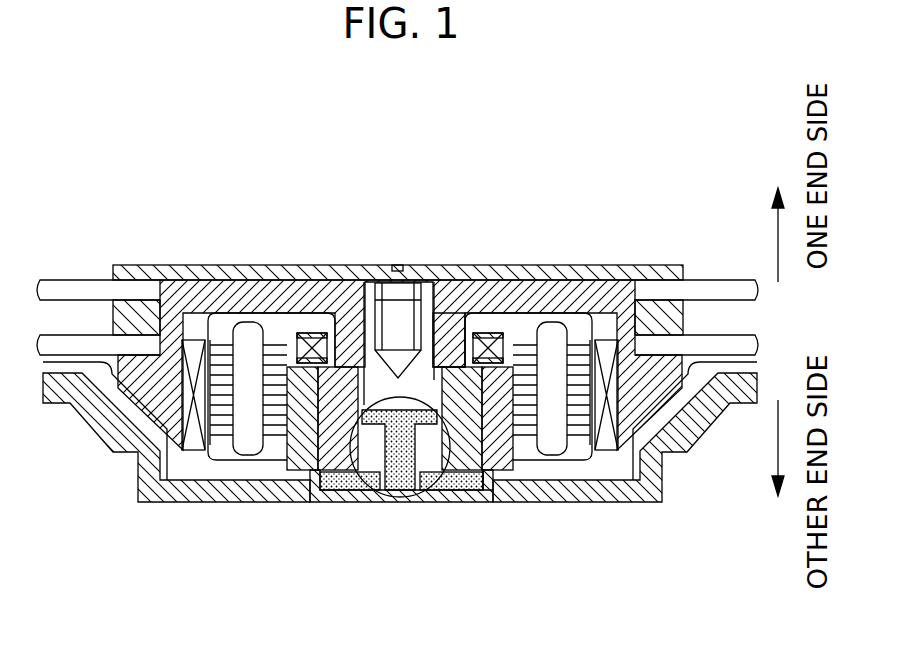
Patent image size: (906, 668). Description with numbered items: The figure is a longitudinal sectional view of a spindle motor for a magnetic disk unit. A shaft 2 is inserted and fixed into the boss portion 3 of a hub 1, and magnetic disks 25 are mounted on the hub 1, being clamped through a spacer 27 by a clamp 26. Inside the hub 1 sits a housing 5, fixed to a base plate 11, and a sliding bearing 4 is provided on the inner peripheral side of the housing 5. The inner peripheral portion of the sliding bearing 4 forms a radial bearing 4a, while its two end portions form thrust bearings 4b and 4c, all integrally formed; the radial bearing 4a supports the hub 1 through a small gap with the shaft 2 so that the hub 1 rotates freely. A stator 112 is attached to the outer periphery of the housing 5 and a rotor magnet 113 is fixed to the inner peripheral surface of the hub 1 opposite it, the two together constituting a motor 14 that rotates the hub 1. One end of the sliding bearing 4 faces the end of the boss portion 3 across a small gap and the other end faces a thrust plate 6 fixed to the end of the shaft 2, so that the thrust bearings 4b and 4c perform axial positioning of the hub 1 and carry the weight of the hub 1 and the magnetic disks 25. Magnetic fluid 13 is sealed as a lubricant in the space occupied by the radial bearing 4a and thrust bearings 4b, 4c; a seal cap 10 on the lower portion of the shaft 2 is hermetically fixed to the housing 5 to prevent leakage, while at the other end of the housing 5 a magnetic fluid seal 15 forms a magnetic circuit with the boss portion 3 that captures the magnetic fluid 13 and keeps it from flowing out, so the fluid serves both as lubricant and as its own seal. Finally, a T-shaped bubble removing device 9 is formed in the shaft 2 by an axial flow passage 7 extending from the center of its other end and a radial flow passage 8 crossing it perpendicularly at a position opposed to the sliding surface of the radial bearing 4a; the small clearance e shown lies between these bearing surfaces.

The hub 1 is at (553, 262).
The shaft 2 is at (430, 360).
The boss portion 3 is at (452, 327).
The sliding bearing 4 is at (331, 355).
The radial bearing 4a is at (454, 505).
The thrust bearing 4b is at (356, 345).
The thrust bearing 4c is at (340, 505).
The housing 5 is at (296, 505).
The thrust plate 6 is at (460, 505).
The axial flow passage 7 is at (384, 503).
The radial flow passage 8 is at (417, 503).
The bubble removing device 9 is at (400, 508).
The seal cap 10 is at (480, 502).
The base plate 11 is at (588, 510).
The magnetic fluid 13 is at (357, 505).
The motor 14 is at (371, 470).
The magnetic fluid seal 15 is at (297, 333).
The magnetic disks 25 is at (67, 288).
The clamp 26 is at (189, 278).
The spacer 27 is at (130, 303).
The stator 112 is at (237, 505).
The rotor magnet 113 is at (262, 568).
The gap e is at (437, 470).